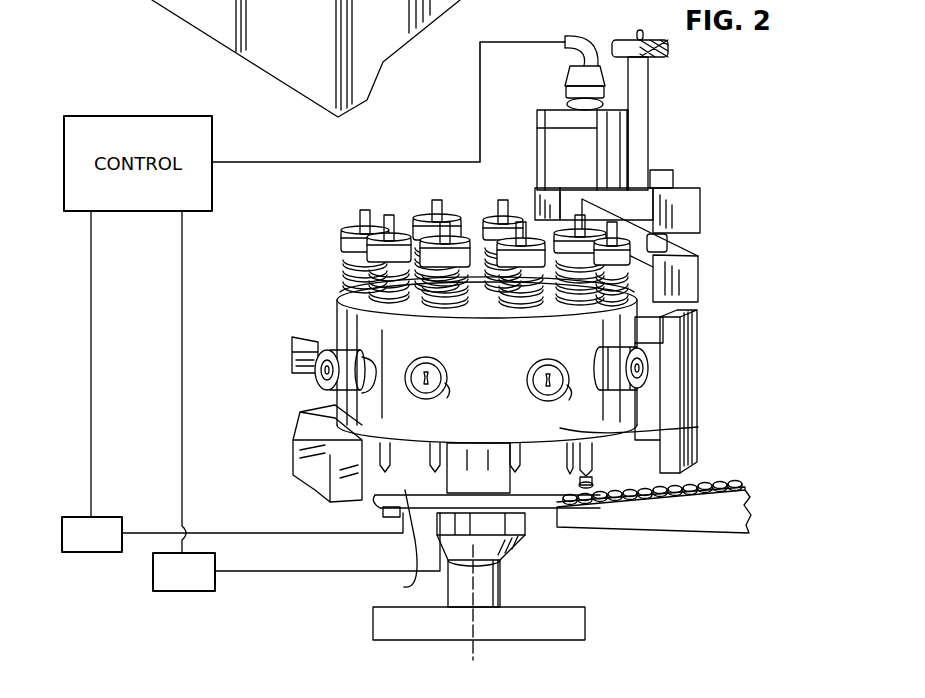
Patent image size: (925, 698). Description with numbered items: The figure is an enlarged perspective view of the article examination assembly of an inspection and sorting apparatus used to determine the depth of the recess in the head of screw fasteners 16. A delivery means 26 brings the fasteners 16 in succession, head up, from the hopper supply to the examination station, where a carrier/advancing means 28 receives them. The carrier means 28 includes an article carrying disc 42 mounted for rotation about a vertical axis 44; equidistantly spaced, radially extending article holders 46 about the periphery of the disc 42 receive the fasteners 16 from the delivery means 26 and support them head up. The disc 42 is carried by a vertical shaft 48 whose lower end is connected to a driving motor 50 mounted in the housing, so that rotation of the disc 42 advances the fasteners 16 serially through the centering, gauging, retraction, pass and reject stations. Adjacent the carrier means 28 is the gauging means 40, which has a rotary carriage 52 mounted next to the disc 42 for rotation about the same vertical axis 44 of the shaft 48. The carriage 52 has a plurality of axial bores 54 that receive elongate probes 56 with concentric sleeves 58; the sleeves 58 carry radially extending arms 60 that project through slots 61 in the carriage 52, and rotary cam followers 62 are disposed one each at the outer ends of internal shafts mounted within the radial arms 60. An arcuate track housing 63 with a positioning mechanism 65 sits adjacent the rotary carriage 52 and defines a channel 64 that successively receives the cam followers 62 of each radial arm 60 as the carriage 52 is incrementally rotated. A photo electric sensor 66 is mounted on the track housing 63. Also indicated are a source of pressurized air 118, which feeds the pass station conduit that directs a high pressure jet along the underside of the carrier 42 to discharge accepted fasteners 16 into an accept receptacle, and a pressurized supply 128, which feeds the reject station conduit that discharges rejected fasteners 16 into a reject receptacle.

The screw fasteners 16 is at (730, 480).
The delivery means 26 is at (683, 518).
The carrier/advancing means 28 is at (543, 518).
The gauging means 40 is at (320, 276).
The article carrying disc 42 is at (418, 525).
The vertical axis 44 is at (473, 590).
The article holders/slots 46 is at (325, 498).
The vertical shaft 48 is at (500, 572).
The driving motor 50 is at (585, 622).
The rotary carriage 52 is at (345, 318).
The axial bores 54 is at (512, 325).
The elongate probes 56 is at (392, 215).
The concentric sleeves 58 is at (340, 250).
The radially extending arms 60 is at (318, 384).
The slots 61 is at (375, 392).
The rotary cam followers 62 is at (332, 332).
The arcuate track housing 63 is at (672, 395).
The channel 64 is at (655, 360).
The positioning mechanism 65 is at (648, 88).
The photo electric sensor 66 is at (553, 143).
The source of pressurized air 118 is at (232, 532).
The pressurized supply 128 is at (296, 552).